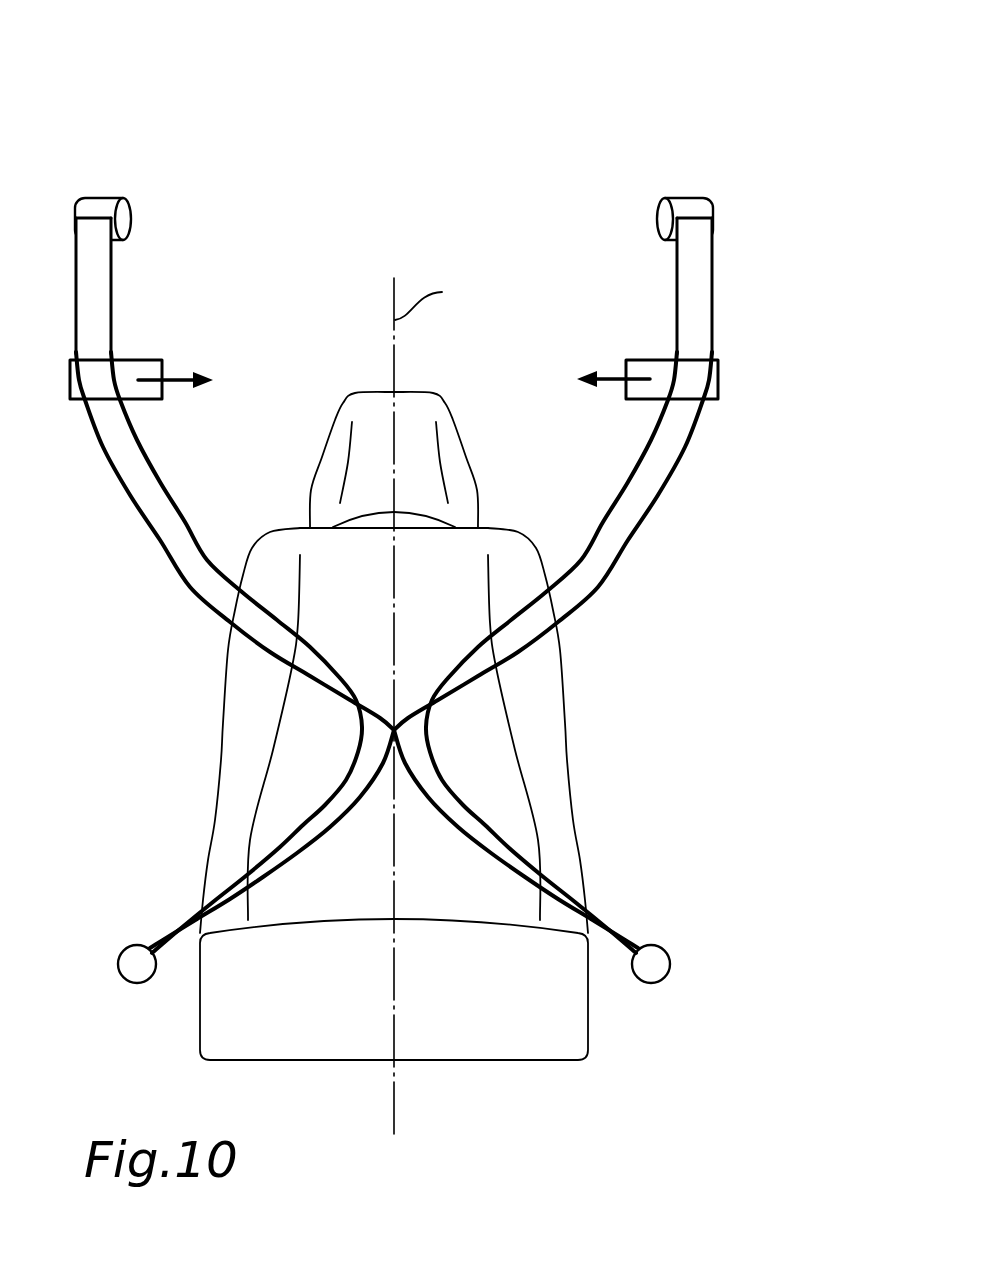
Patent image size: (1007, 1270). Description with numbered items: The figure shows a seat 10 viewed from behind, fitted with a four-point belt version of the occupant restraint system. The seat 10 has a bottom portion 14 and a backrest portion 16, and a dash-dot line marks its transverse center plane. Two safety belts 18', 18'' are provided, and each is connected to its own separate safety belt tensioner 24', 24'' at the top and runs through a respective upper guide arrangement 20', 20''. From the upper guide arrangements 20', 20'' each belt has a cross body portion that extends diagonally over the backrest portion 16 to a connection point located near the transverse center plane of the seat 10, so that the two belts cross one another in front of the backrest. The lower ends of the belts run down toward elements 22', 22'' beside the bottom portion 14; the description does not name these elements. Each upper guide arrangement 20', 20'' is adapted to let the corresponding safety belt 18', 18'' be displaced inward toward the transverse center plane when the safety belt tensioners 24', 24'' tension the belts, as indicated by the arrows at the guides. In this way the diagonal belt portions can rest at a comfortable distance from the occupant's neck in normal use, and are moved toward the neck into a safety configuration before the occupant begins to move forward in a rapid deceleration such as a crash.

The seat 10 is at (186, 86).
The bottom portion 14 is at (457, 1037).
The backrest portion 16 is at (250, 735).
The safety belt 18' is at (556, 585).
The safety belt 18'' is at (235, 585).
The upper guide arrangement 20' is at (706, 357).
The upper guide arrangement 20'' is at (145, 341).
The right belt anchor 22' is at (704, 937).
The left belt anchor 22'' is at (88, 937).
The safety belt tensioner 24' is at (639, 198).
The safety belt tensioner 24'' is at (158, 198).